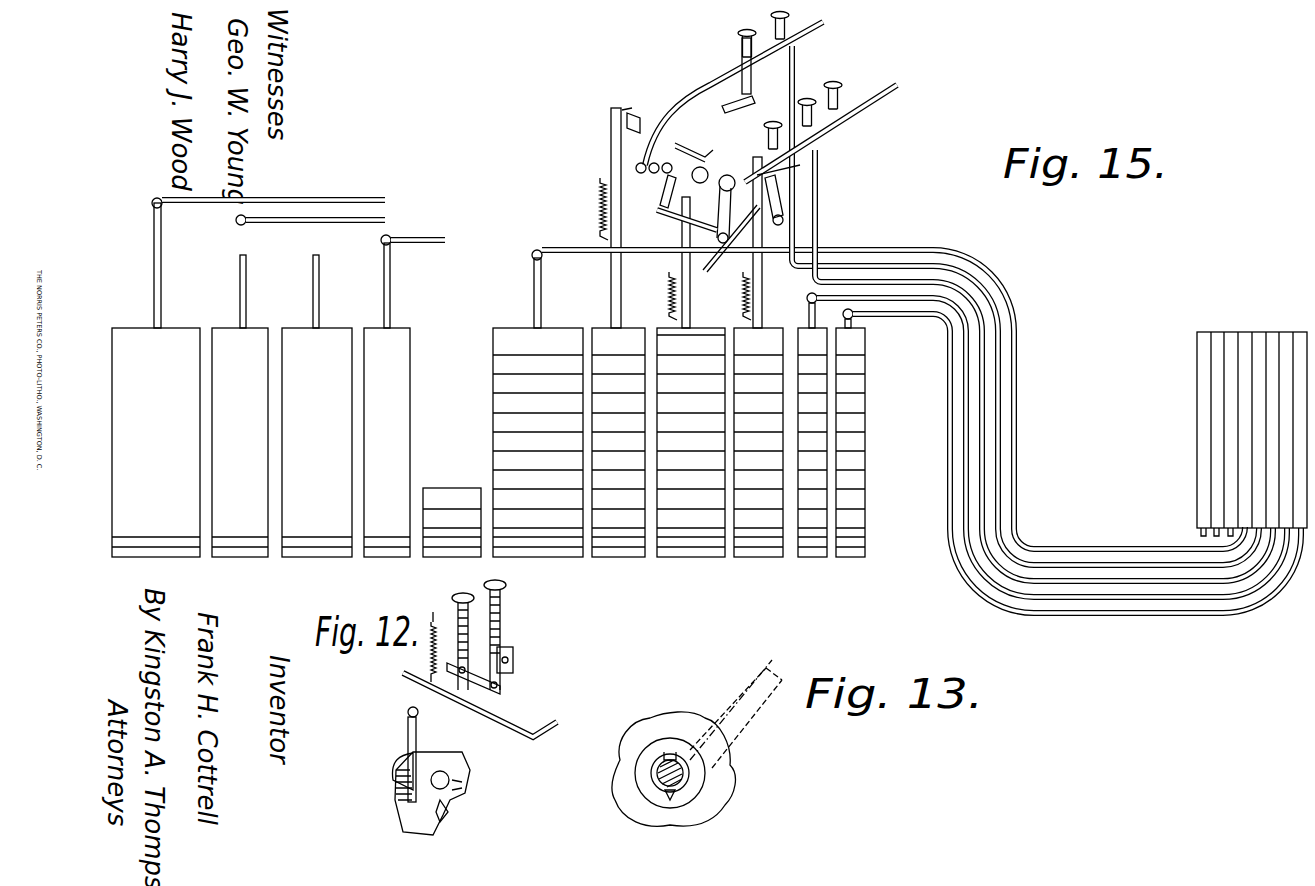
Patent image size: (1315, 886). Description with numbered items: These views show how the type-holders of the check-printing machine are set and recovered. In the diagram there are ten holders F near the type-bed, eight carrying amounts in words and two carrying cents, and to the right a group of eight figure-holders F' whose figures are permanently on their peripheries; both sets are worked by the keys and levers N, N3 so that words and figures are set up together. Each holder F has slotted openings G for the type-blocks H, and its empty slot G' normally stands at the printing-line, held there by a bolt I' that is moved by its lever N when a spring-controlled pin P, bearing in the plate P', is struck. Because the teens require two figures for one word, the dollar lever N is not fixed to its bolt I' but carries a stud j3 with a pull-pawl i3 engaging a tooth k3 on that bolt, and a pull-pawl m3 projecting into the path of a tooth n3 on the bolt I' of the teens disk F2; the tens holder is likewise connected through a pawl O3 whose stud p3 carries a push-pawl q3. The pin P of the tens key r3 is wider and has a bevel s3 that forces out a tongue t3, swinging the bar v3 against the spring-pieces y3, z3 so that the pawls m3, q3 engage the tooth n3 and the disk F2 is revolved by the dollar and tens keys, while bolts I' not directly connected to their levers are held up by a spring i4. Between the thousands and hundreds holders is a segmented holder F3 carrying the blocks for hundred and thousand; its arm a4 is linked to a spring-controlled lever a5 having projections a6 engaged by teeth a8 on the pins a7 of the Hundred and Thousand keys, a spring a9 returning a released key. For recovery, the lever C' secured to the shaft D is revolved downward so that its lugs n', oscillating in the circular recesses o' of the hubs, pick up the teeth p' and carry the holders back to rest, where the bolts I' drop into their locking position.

In FIG. 15, the lever N is at (384, 200).
In FIG. 15, the levers N3 is at (1204, 537).
In FIG. 15, the bolt I' is at (502, 218).
In FIG. 15, the holder F is at (488, 455).
In FIG. 15, the disk F2 is at (293, 560).
In FIG. 15, the segmented holder F3 is at (455, 560).
In FIG. 12, the segmented holder F3 is at (452, 765).
In FIG. 15, the empty slot G' is at (488, 566).
In FIG. 15, the type-blocks H is at (460, 520).
In FIG. 12, the type-blocks H is at (445, 815).
In FIG. 15, the type sections II is at (493, 458).
In FIG. 15, the holders F' is at (1236, 430).
In FIG. 13, the holders F' is at (692, 769).
In FIG. 15, the pawl O3 is at (634, 135).
In FIG. 15, the pins P is at (760, 66).
In FIG. 15, the key r3 is at (742, 48).
In FIG. 15, the bevel s3 is at (755, 74).
In FIG. 15, the tongue t3 is at (738, 100).
In FIG. 15, the spring-piece z3 is at (682, 142).
In FIG. 15, the stud p3 is at (648, 163).
In FIG. 15, the bar v3 is at (702, 169).
In FIG. 15, the push-pawl q3 is at (660, 198).
In FIG. 15, the spring-piece y3 is at (730, 178).
In FIG. 15, the tooth n3 is at (672, 240).
In FIG. 15, the pull-pawl m3 is at (731, 242).
In FIG. 15, the tooth k3 is at (800, 172).
In FIG. 15, the pull-pawl i3 is at (788, 196).
In FIG. 15, the stud j3 is at (784, 218).
In FIG. 15, the spring i4 is at (596, 192).
In FIG. 12, the arm a4 is at (506, 646).
In FIG. 12, the spring-controlled lever a5 is at (430, 700).
In FIG. 12, the projections a6 is at (478, 678).
In FIG. 12, the spring-controlled pins a7 is at (468, 655).
In FIG. 12, the tooth a8 is at (460, 665).
In FIG. 12, the spring a9 is at (428, 662).
In FIG. 12, the plate P' is at (480, 705).
In FIG. 12, the slotted openings G is at (473, 792).
In FIG. 13, the circular recesses o' is at (671, 748).
In FIG. 13, the tooth p' is at (670, 734).
In FIG. 13, the shaft D is at (660, 773).
In FIG. 13, the lugs n' is at (636, 810).
In FIG. 13, the lever C' is at (758, 713).